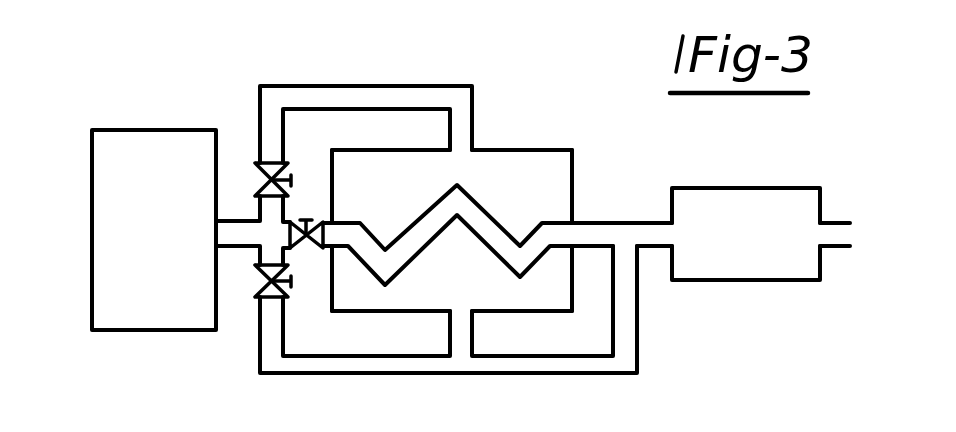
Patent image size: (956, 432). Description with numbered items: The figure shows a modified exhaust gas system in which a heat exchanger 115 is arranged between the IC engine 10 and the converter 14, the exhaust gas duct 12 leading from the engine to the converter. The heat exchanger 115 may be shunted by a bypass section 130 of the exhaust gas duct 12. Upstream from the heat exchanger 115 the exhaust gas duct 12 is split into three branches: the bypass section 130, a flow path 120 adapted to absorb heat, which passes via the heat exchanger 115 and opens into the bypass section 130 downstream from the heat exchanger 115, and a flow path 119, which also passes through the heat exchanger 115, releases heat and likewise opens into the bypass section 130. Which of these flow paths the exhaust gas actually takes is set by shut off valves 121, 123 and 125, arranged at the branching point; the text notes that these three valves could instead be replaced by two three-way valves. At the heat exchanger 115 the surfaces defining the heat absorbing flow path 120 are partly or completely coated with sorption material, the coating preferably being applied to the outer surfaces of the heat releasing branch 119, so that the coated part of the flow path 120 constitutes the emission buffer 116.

The IC engine 10 is at (145, 310).
The exhaust gas duct 12 is at (603, 233).
The converter 14 is at (717, 254).
The heat exchanger 115 is at (563, 157).
The emission buffer 116 is at (476, 160).
The heat releasing flow path 119 is at (398, 247).
The heat absorbing flow path 120 is at (271, 97).
The shut off valve 121 is at (288, 162).
The shut off valve 123 is at (321, 249).
The shut off valve 125 is at (263, 293).
The bypass section 130 is at (392, 363).